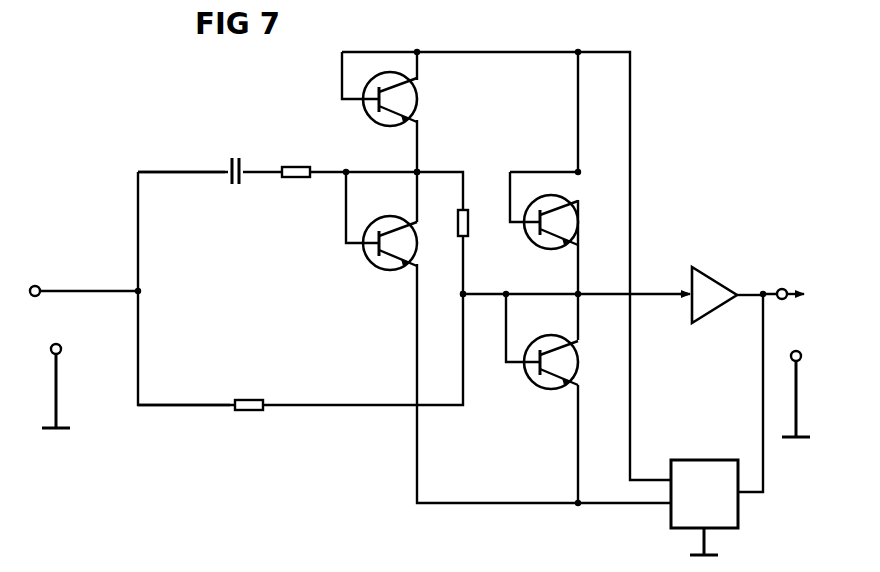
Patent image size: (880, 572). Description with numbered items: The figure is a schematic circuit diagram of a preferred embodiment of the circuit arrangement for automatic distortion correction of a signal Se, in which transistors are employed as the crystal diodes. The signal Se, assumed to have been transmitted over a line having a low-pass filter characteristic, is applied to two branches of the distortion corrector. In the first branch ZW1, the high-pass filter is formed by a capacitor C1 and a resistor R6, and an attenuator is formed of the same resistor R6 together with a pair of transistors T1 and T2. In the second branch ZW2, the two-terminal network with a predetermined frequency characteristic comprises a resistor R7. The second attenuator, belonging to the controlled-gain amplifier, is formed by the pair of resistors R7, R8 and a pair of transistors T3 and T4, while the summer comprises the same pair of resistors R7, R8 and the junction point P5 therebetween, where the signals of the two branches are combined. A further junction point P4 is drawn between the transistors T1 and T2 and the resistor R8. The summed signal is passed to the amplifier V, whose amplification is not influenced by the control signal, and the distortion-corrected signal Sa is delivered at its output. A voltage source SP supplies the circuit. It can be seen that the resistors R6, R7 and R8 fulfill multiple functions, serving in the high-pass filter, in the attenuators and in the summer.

The signal Se is at (50, 357).
The distortion-corrected signal Sa is at (793, 363).
The first branch ZW1 is at (181, 154).
The second branch ZW2 is at (184, 421).
The capacitor C1 is at (236, 154).
The resistor R6 is at (296, 190).
The resistor R7 is at (249, 388).
The resistor R8 is at (476, 221).
The transistor T1 is at (403, 243).
The transistor T2 is at (405, 99).
The transistor T3 is at (564, 362).
The transistor T4 is at (564, 222).
The circuit node P4 is at (432, 155).
The junction point P5 is at (475, 310).
The amplifier V is at (721, 295).
The voltage source SP is at (686, 500).